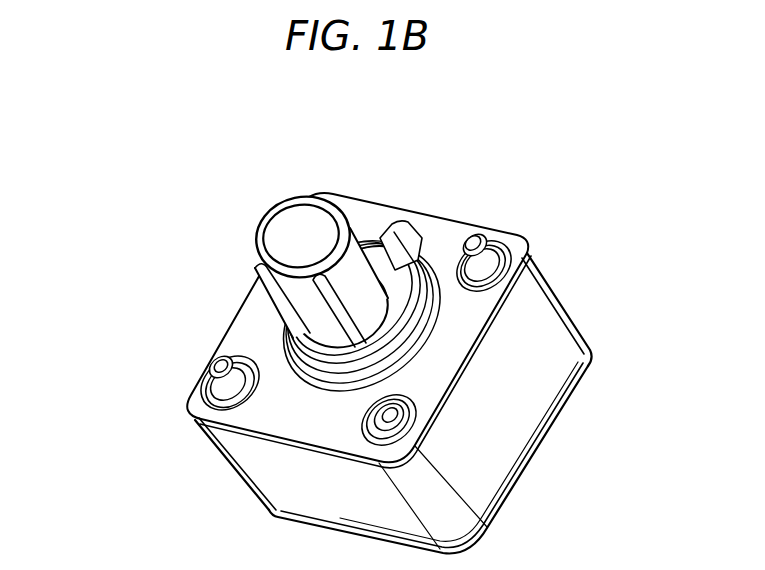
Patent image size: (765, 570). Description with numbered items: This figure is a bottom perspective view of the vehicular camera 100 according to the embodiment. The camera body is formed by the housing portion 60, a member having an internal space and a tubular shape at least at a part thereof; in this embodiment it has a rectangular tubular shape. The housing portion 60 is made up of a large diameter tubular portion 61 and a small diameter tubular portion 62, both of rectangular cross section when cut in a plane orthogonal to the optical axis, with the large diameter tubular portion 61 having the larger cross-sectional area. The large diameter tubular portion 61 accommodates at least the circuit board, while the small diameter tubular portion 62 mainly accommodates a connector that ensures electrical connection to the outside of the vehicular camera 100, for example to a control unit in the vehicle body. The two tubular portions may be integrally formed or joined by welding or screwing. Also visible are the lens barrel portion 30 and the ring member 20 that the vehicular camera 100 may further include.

The vehicular camera 100 is at (347, 307).
The ring member 20 is at (347, 373).
The lens barrel portion 30 is at (531, 487).
The housing portion 60 is at (314, 371).
The large diameter tubular portion 61 is at (231, 462).
The small diameter tubular portion 62 is at (273, 302).